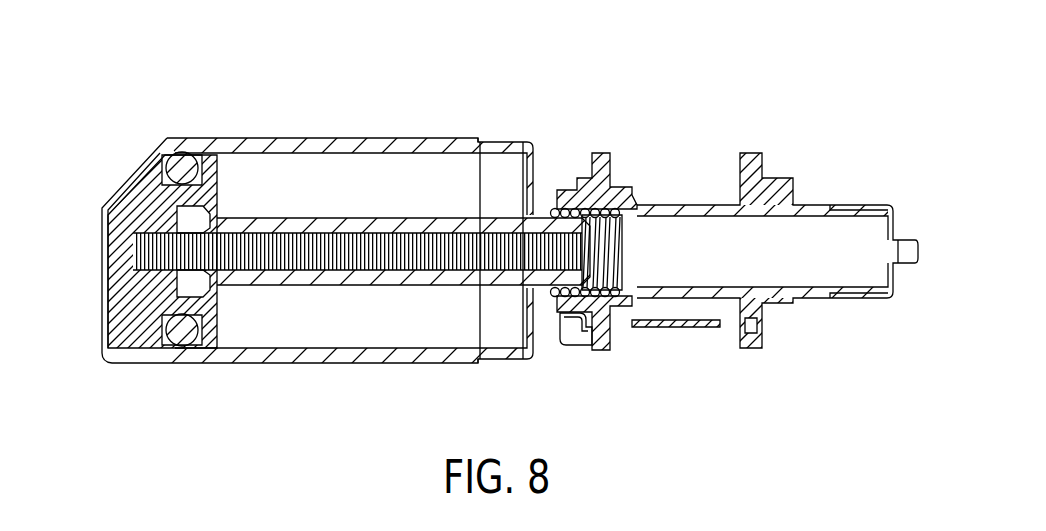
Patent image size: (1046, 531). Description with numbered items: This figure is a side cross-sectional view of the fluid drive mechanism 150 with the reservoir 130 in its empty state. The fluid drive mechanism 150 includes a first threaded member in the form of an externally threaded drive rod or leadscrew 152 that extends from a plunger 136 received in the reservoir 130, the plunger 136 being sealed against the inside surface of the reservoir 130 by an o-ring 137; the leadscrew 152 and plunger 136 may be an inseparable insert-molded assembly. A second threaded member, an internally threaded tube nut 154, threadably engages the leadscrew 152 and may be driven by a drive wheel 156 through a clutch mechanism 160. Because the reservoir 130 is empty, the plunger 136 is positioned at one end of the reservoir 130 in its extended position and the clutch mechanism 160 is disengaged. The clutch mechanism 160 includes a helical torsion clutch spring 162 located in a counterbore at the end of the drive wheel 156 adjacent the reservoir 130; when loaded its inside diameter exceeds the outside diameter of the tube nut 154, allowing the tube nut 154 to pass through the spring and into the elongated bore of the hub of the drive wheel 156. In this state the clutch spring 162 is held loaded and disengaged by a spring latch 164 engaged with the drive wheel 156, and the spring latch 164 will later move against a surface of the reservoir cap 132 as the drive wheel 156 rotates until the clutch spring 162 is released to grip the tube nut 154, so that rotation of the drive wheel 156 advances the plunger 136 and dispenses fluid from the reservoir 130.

The reservoir 130 is at (333, 138).
The reservoir cap 132 is at (520, 142).
The plunger 136 is at (150, 193).
The o-ring 137 is at (182, 340).
The fluid drive mechanism 150 is at (729, 89).
The leadscrew 152 is at (317, 272).
The tube nut 154 is at (450, 277).
The drive wheel 156 is at (680, 208).
The clutch mechanism 160 is at (572, 192).
The clutch spring 162 is at (600, 300).
The spring latch 164 is at (570, 332).